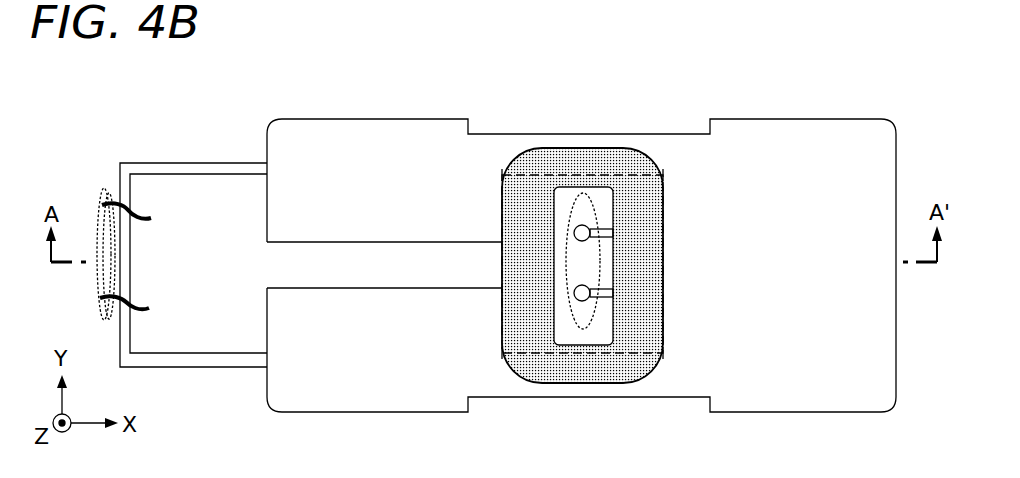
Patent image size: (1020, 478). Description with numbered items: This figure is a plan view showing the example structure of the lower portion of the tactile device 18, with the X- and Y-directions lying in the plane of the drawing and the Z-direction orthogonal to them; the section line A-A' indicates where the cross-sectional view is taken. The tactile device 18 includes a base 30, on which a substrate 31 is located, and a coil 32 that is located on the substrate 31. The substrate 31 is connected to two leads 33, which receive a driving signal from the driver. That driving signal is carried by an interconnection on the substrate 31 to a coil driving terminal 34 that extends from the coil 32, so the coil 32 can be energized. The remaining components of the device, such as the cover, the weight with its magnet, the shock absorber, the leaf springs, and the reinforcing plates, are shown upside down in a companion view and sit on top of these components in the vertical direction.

The tactile device 18 is at (210, 93).
The base 30 is at (330, 119).
The substrate 31 is at (200, 176).
The coil 32 is at (550, 148).
The leads 33 is at (104, 188).
The coil driving terminal 34 is at (585, 193).